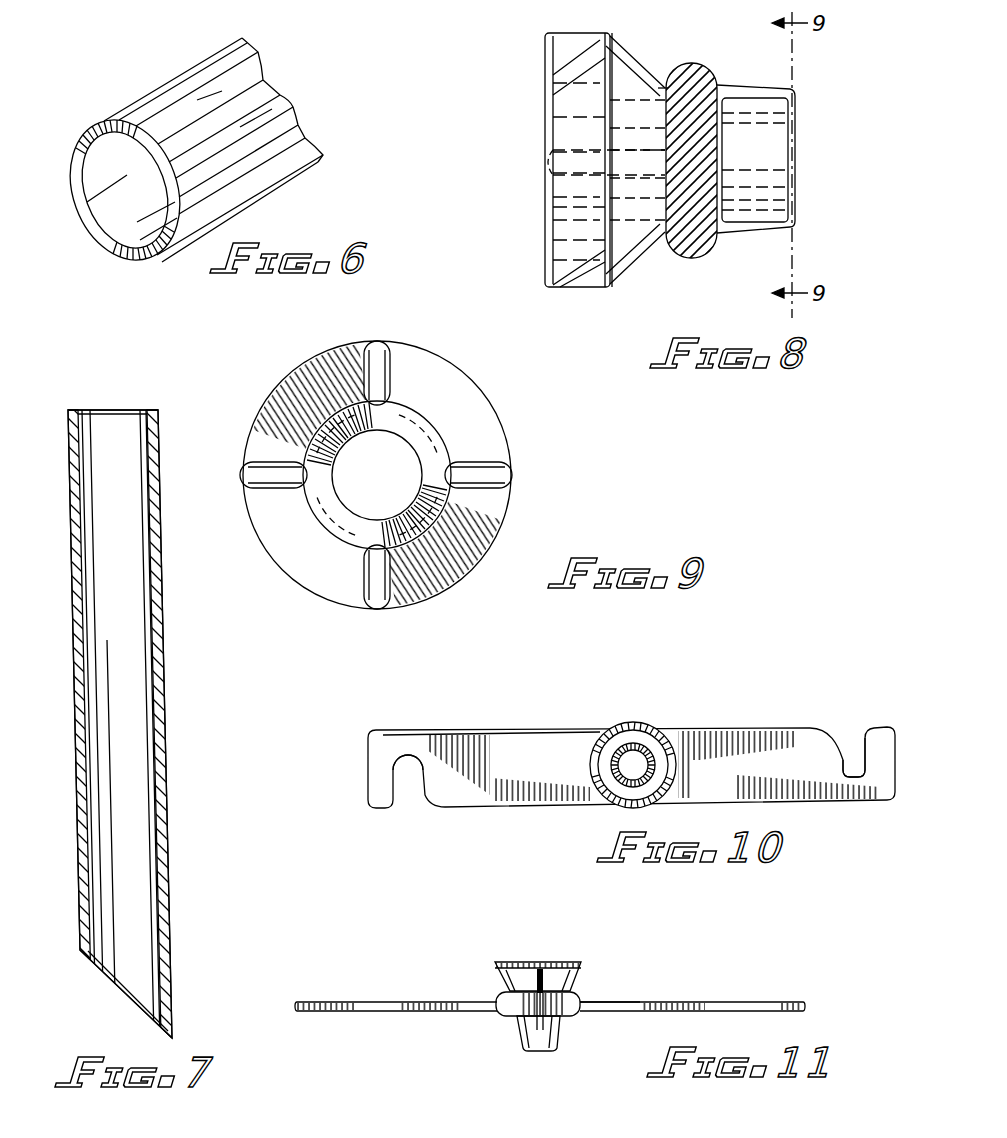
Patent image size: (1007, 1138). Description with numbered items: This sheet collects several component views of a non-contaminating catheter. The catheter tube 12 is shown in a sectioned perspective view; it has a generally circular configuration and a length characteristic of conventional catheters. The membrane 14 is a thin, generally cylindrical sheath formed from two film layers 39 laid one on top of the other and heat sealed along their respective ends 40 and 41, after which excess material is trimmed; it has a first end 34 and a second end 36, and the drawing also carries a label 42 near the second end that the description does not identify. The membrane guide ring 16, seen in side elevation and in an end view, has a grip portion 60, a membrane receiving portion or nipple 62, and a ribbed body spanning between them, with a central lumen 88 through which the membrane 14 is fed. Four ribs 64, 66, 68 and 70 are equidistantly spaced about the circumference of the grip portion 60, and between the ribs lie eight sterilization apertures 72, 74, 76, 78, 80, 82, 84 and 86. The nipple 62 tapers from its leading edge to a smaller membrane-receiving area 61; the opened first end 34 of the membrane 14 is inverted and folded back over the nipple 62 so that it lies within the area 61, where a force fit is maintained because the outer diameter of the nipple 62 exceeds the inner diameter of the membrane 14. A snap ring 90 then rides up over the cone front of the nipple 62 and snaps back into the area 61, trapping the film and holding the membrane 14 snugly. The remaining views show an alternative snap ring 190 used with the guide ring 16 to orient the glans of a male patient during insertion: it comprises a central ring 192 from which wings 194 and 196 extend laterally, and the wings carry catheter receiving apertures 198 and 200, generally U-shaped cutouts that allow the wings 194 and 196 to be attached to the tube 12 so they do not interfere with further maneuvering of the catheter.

In FIG. 6, the catheter tube 12 is at (157, 98).
In FIG. 7, the membrane 14 is at (172, 775).
In FIG. 8, the membrane guide ring 16 is at (621, 288).
In FIG. 9, the membrane guide ring 16 is at (503, 426).
In FIG. 10, the membrane guide ring 16 is at (649, 727).
In FIG. 11, the membrane guide ring 16 is at (558, 962).
In FIG. 7, the first end 34 is at (106, 416).
In FIG. 7, the second end 36 is at (146, 1002).
In FIG. 7, the layers 39 is at (128, 517).
In FIG. 7, the end 40 is at (72, 566).
In FIG. 7, the end 41 is at (163, 528).
In FIG. 7, the bevel edge 42 is at (108, 974).
In FIG. 8, the grip portion 60 is at (546, 97).
In FIG. 8, the membrane-receiving area 61 is at (660, 80).
In FIG. 8, the membrane receiving portion 62 is at (788, 147).
In FIG. 8, the rib 64 is at (616, 46).
In FIG. 9, the rib 64 is at (385, 356).
In FIG. 8, the rib 66 is at (552, 166).
In FIG. 9, the rib 66 is at (510, 488).
In FIG. 8, the rib 68 is at (641, 258).
In FIG. 9, the rib 68 is at (392, 595).
In FIG. 9, the rib 70 is at (262, 470).
In FIG. 9, the sterilization aperture 72 is at (310, 512).
In FIG. 9, the sterilization aperture 74 is at (345, 538).
In FIG. 9, the sterilization aperture 76 is at (450, 575).
In FIG. 9, the sterilization aperture 78 is at (500, 530).
In FIG. 9, the sterilization aperture 80 is at (443, 440).
In FIG. 9, the sterilization aperture 82 is at (418, 405).
In FIG. 9, the sterilization aperture 84 is at (330, 382).
In FIG. 9, the sterilization aperture 86 is at (300, 428).
In FIG. 9, the central lumen 88 is at (398, 488).
In FIG. 8, the snap ring 90 is at (712, 248).
In FIG. 10, the snap ring 190 is at (540, 708).
In FIG. 11, the snap ring 190 is at (382, 1000).
In FIG. 11, the central ring 192 is at (582, 995).
In FIG. 10, the wing 194 is at (778, 781).
In FIG. 11, the wing 194 is at (632, 1012).
In FIG. 10, the wing 196 is at (532, 781).
In FIG. 11, the wing 196 is at (416, 1012).
In FIG. 10, the catheter receiving aperture 198 is at (392, 777).
In FIG. 11, the catheter receiving aperture 198 is at (336, 1002).
In FIG. 10, the catheter receiving aperture 200 is at (858, 745).